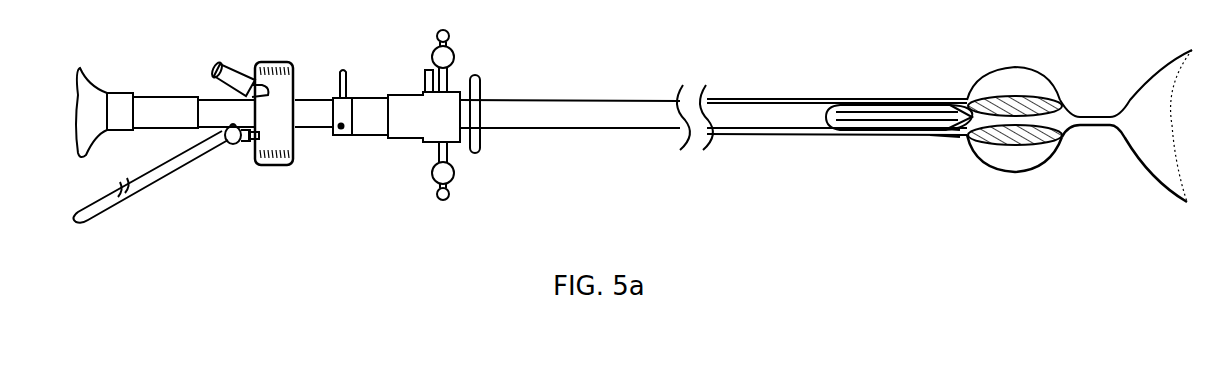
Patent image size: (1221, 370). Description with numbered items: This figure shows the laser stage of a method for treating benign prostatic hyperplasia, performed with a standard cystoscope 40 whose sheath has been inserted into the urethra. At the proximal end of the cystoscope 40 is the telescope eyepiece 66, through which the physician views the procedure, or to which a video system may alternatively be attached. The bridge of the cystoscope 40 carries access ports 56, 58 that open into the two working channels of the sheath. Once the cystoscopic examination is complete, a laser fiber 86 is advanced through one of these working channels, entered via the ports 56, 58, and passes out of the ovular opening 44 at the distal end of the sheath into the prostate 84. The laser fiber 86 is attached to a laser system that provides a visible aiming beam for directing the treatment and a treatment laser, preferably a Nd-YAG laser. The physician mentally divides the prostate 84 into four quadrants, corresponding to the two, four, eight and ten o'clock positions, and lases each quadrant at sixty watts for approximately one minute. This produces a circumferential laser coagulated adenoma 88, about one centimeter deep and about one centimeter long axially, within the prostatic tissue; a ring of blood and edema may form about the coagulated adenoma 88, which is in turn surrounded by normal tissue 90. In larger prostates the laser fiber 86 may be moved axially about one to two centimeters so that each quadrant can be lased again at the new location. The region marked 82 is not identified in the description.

The cystoscope 40 is at (556, 182).
The ovular opening 44 is at (876, 136).
The access port 56 is at (246, 146).
The access port 58 is at (232, 77).
The eyepiece 66 is at (107, 91).
The tissue wall 82 is at (1155, 70).
The prostate 84 is at (1015, 67).
The laser fiber 86 is at (151, 186).
The laser coagulated adenoma 88 is at (1045, 100).
The normal tissue 90 is at (1028, 156).